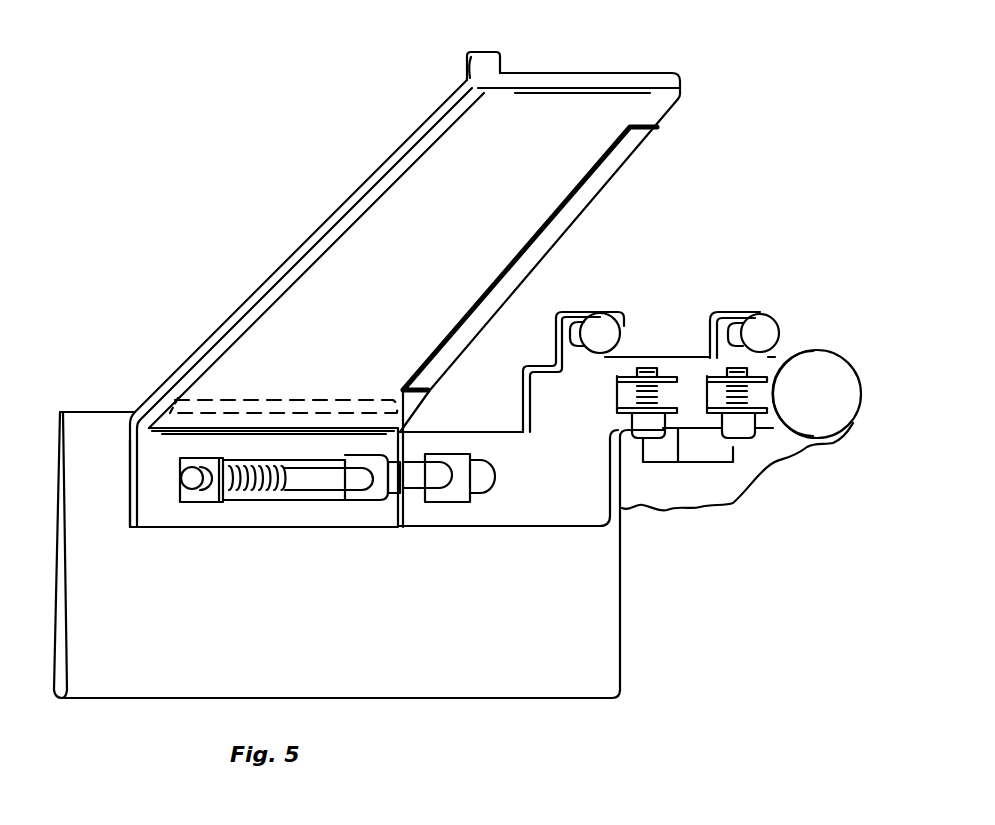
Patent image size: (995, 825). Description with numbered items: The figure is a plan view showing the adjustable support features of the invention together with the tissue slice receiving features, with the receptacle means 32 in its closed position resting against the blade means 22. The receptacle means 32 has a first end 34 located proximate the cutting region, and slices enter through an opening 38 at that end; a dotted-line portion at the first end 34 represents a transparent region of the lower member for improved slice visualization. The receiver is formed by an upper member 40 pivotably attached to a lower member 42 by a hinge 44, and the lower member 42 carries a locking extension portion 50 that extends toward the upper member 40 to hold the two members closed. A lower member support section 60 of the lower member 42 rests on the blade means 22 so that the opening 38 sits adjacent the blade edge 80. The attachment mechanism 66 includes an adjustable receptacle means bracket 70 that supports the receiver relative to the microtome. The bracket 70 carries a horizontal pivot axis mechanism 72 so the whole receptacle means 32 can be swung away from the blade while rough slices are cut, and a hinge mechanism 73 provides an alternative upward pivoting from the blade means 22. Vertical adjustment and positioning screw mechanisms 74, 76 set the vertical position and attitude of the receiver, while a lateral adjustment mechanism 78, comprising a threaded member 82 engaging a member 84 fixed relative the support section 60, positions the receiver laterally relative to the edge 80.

The blade means 22 is at (371, 614).
The receptacle means 32 is at (405, 276).
The first end 34 is at (276, 401).
The opening 38 is at (145, 400).
The upper member 40 is at (272, 263).
The lower member 42 is at (456, 244).
The hinge 44 is at (575, 232).
The locking extension portion 50 is at (502, 60).
The lower member support section 60 is at (166, 515).
The attachment mechanism 66 is at (715, 376).
The adjustable receptacle means bracket 70 is at (710, 350).
The horizontal pivot axis mechanism 72 is at (818, 368).
The hinge mechanism 73 is at (400, 497).
The vertical adjustment and positioning screw mechanism 74 is at (750, 442).
The vertical adjustment and positioning screw mechanism 76 is at (650, 435).
The lateral adjustment mechanism 78 is at (290, 496).
The edge 80 is at (85, 412).
The threaded member 82 is at (306, 512).
The member 84 is at (200, 457).